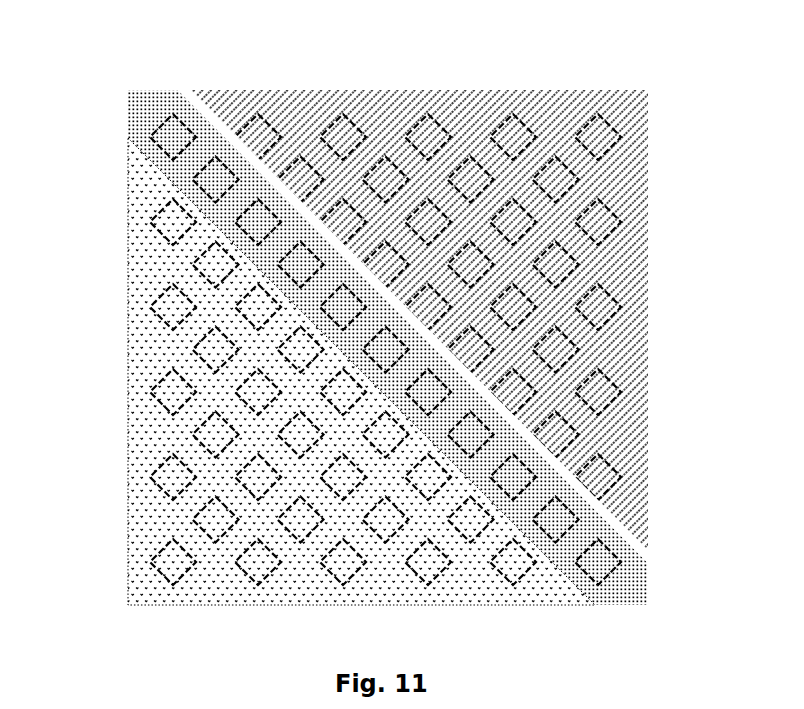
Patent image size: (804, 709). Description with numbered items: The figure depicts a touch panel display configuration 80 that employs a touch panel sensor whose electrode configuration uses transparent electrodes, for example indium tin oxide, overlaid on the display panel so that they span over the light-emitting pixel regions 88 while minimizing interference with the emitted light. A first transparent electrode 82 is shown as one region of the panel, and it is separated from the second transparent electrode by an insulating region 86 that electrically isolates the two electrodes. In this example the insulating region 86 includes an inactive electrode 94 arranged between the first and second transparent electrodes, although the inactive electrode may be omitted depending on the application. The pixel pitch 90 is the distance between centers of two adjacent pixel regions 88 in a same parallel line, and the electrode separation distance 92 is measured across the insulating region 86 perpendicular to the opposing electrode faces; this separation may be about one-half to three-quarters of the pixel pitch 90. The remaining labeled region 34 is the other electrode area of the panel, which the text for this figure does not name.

The composite structure 80 is at (392, 364).
The first region 82 is at (634, 358).
The second region 34 is at (148, 512).
The boundary gap 86 is at (635, 552).
The unit cell 88 is at (165, 565).
The unit cells 90 is at (518, 568).
The transition band 92 is at (225, 55).
The band material 94 is at (627, 587).